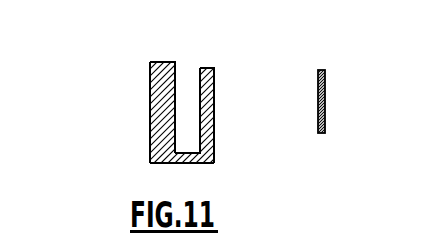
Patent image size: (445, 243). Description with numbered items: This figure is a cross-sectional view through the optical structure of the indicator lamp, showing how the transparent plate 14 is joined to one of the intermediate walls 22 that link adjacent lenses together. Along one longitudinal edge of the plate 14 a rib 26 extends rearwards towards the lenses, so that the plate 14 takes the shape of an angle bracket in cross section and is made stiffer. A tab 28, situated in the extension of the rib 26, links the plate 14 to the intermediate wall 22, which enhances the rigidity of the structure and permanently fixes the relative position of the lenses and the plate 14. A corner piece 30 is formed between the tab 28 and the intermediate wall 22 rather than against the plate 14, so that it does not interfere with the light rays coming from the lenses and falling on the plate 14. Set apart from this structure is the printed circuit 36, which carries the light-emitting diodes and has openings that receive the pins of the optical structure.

The transparent plate 14 is at (150, 93).
The intermediate wall 22 is at (214, 101).
The rib 26 is at (181, 163).
The tab 28 is at (207, 163).
The corner piece 30 is at (200, 153).
The printed circuit 36 is at (325, 92).